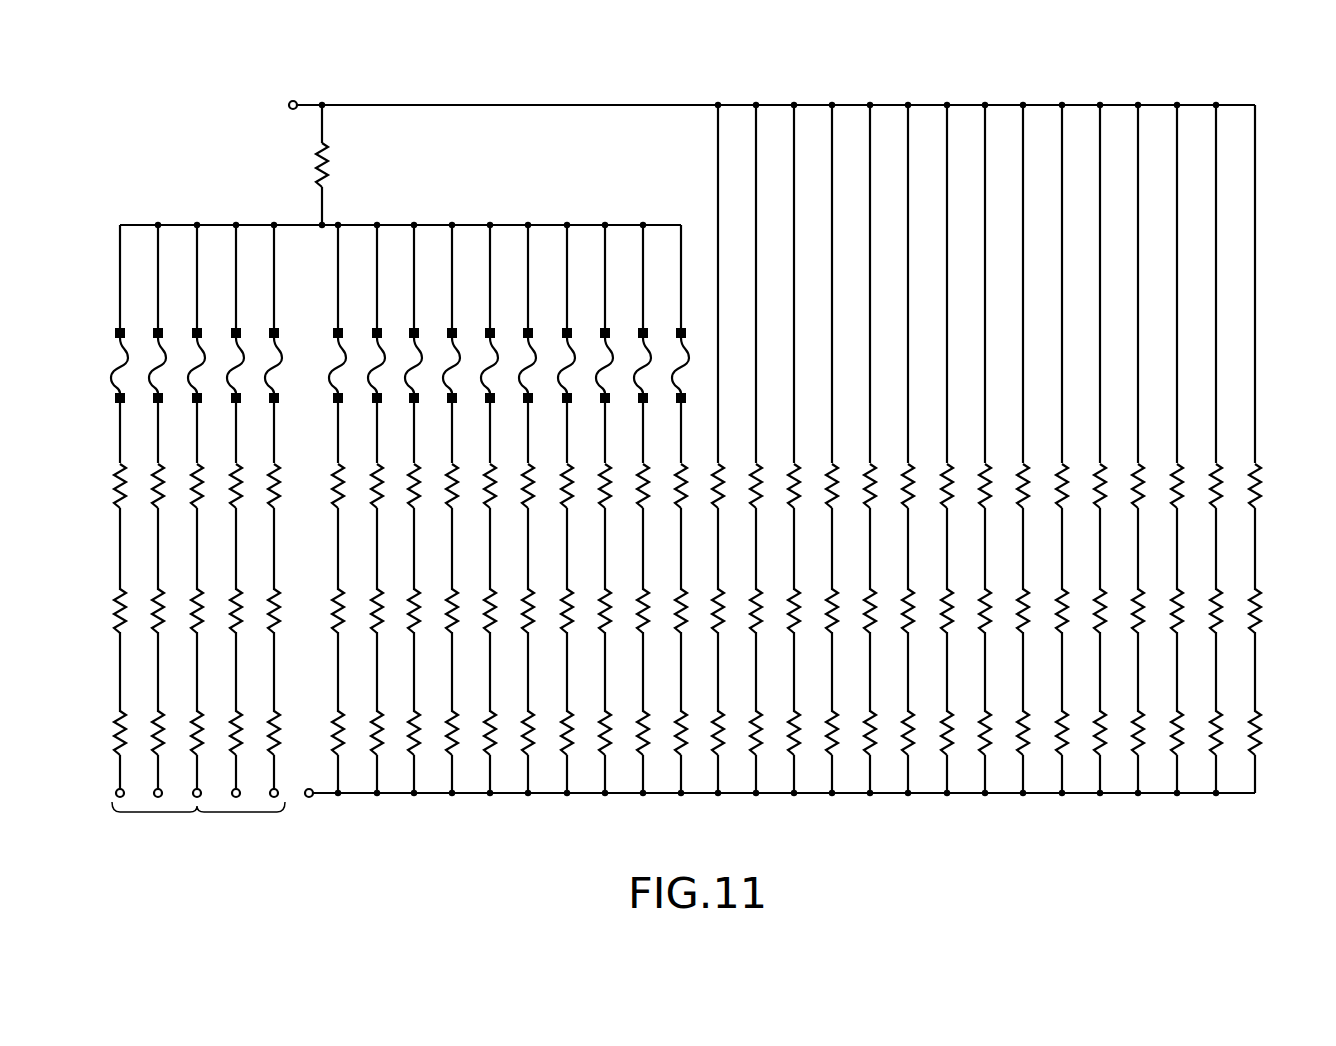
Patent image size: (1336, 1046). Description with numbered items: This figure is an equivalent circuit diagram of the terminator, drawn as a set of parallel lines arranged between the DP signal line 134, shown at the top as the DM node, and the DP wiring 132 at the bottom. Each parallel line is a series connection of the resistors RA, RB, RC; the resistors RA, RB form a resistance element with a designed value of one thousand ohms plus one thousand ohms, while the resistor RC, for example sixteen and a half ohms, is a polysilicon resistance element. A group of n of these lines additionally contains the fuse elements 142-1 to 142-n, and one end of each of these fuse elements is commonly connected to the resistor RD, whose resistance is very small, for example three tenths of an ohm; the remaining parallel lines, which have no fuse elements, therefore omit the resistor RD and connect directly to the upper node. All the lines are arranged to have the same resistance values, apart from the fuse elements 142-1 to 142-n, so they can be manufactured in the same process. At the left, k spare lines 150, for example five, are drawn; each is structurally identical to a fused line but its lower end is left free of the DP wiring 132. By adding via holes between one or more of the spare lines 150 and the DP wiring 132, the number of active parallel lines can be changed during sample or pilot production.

The DP signal line 134 is at (304, 103).
The DP wiring 132 is at (318, 800).
The resistor RD is at (329, 160).
The fuse element 142-1 is at (335, 358).
The fuse element 142-n is at (679, 361).
The resistor RC is at (1262, 487).
The resistor RB is at (1262, 610).
The resistor RA is at (1262, 732).
The spare lines 150 is at (198, 824).